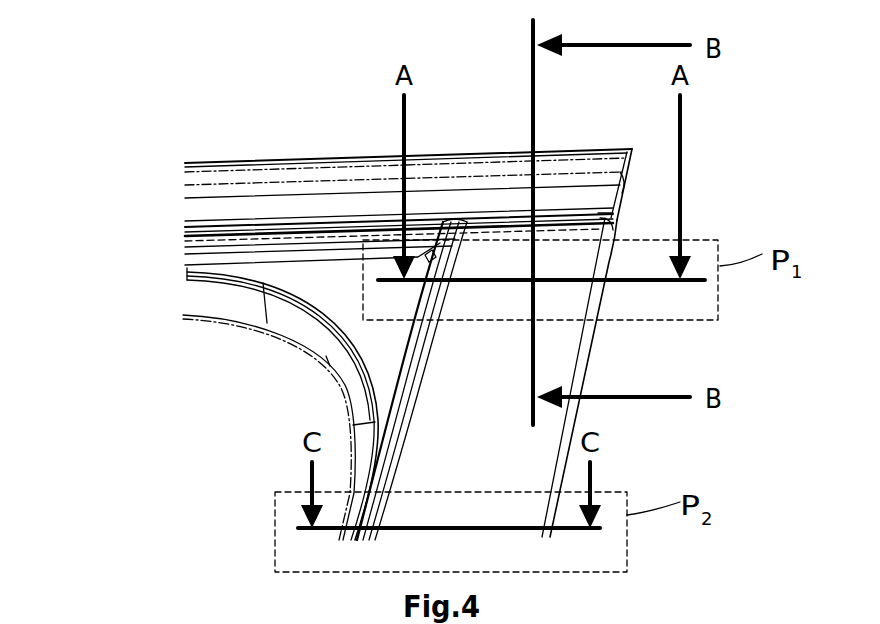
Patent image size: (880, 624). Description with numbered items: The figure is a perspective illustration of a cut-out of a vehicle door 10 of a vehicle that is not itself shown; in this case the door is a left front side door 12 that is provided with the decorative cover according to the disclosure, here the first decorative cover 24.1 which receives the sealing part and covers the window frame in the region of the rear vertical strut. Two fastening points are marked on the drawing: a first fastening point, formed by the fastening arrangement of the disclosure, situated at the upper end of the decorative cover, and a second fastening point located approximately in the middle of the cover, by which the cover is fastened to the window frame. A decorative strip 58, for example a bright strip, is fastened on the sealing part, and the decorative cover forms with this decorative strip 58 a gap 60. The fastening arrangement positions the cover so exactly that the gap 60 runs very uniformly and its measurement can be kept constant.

The vehicle door 10 is at (387, 282).
The left front side door 12 is at (166, 91).
The decorative strip 58 is at (325, 163).
The gap 60 is at (600, 213).
The first decorative cover 24.1 is at (568, 372).